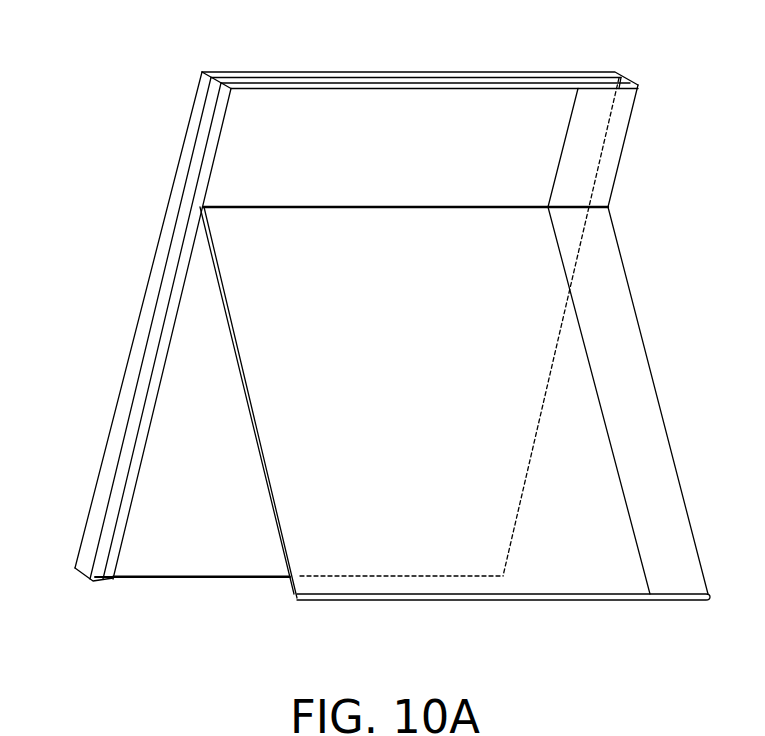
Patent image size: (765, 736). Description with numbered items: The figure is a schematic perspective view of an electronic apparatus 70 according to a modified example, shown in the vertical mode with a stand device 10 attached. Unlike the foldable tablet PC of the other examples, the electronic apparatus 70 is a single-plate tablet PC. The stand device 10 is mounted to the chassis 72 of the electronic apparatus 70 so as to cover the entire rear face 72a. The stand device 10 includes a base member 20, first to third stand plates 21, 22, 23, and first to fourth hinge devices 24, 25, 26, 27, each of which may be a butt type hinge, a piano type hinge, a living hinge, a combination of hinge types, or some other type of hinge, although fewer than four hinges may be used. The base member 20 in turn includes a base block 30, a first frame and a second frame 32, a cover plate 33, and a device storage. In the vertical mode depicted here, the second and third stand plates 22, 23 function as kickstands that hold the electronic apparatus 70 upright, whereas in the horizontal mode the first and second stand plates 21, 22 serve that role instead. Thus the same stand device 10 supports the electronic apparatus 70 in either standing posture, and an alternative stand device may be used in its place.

The stand device 10 is at (374, 353).
The base member 20 is at (106, 481).
The first stand plate 21 is at (278, 112).
The second stand plate 22 is at (365, 563).
The third stand plate 23 is at (670, 577).
The first hinge device 24 is at (563, 137).
The second hinge device 25 is at (375, 207).
The third hinge device 26 is at (596, 380).
The fourth hinge device 27 is at (570, 207).
The base block 30 is at (590, 137).
The second frame 32 is at (117, 527).
The cover plate 33 is at (153, 563).
The electronic apparatus 70 is at (125, 70).
The chassis 72 is at (381, 68).
The rear face 72a is at (205, 150).